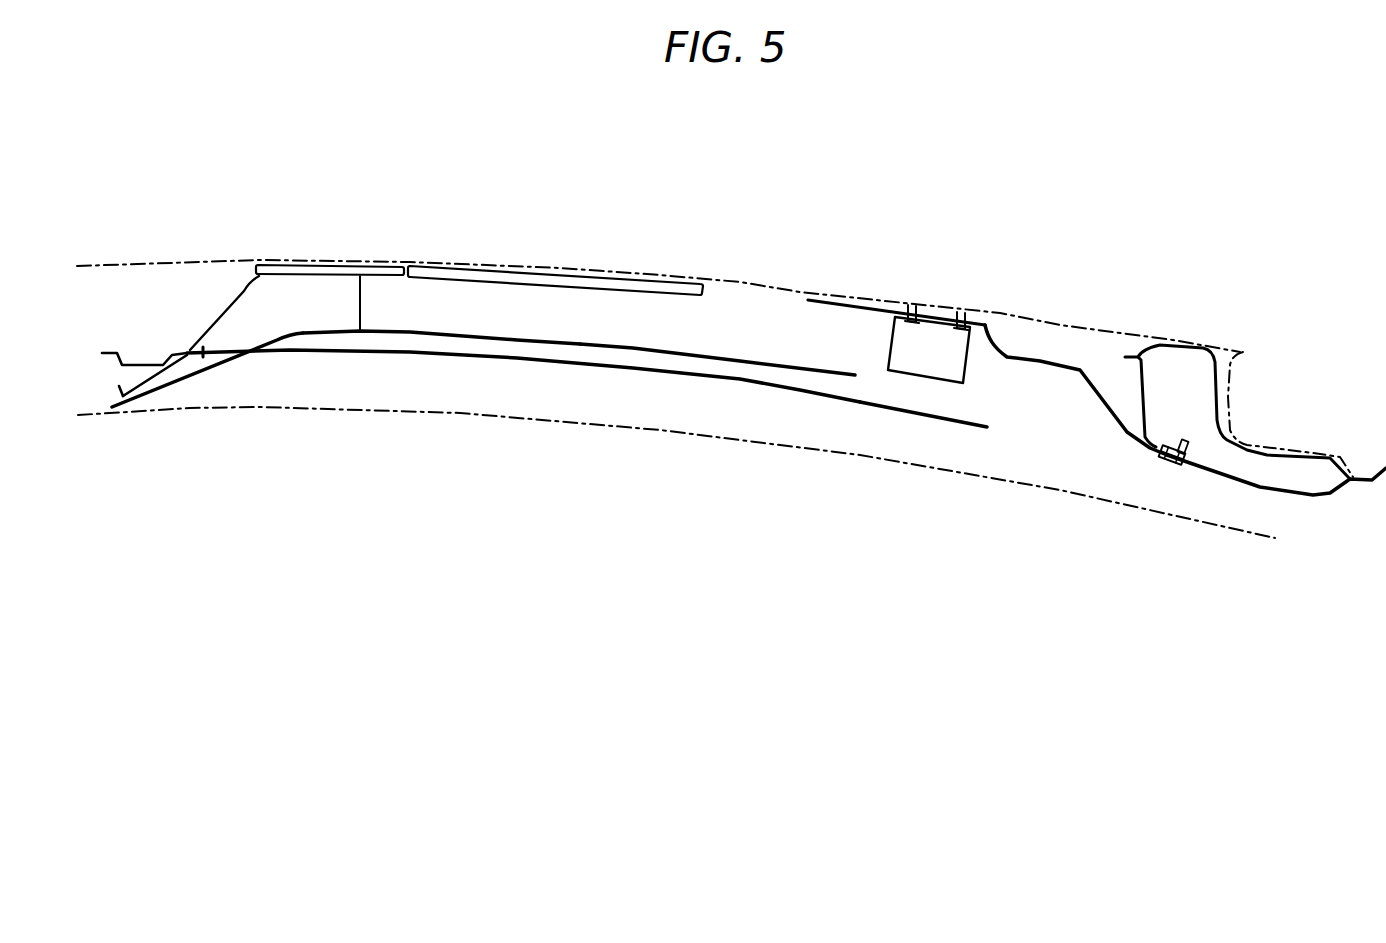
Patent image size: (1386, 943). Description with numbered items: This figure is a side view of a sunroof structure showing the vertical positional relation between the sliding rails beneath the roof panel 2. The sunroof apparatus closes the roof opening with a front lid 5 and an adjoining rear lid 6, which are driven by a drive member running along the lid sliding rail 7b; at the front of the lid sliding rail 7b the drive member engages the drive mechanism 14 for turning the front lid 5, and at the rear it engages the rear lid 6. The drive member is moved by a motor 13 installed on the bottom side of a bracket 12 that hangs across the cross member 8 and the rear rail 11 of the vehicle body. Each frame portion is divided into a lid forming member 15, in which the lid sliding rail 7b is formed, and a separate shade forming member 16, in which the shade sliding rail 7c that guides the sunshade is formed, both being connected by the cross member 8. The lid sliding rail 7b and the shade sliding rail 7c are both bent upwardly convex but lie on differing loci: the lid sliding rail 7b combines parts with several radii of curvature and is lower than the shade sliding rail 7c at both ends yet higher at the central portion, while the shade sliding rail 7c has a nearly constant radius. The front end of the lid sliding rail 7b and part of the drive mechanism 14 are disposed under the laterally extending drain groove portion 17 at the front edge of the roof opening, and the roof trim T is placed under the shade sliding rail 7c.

The roof panel 2 is at (1027, 315).
The front lid 5 is at (313, 263).
The rear lid 6 is at (577, 269).
The lid sliding rail 7b is at (637, 348).
The shade sliding rail 7c is at (755, 382).
The cross member 8 is at (853, 300).
The rear rail 11 is at (1145, 403).
The bracket 12 is at (1040, 361).
The motor 13 is at (932, 338).
The drive mechanism 14 is at (283, 315).
The lid forming member 15 is at (517, 340).
The shade forming member 16 is at (920, 413).
The drain groove portion 17 is at (142, 362).
The roof trim T is at (842, 453).